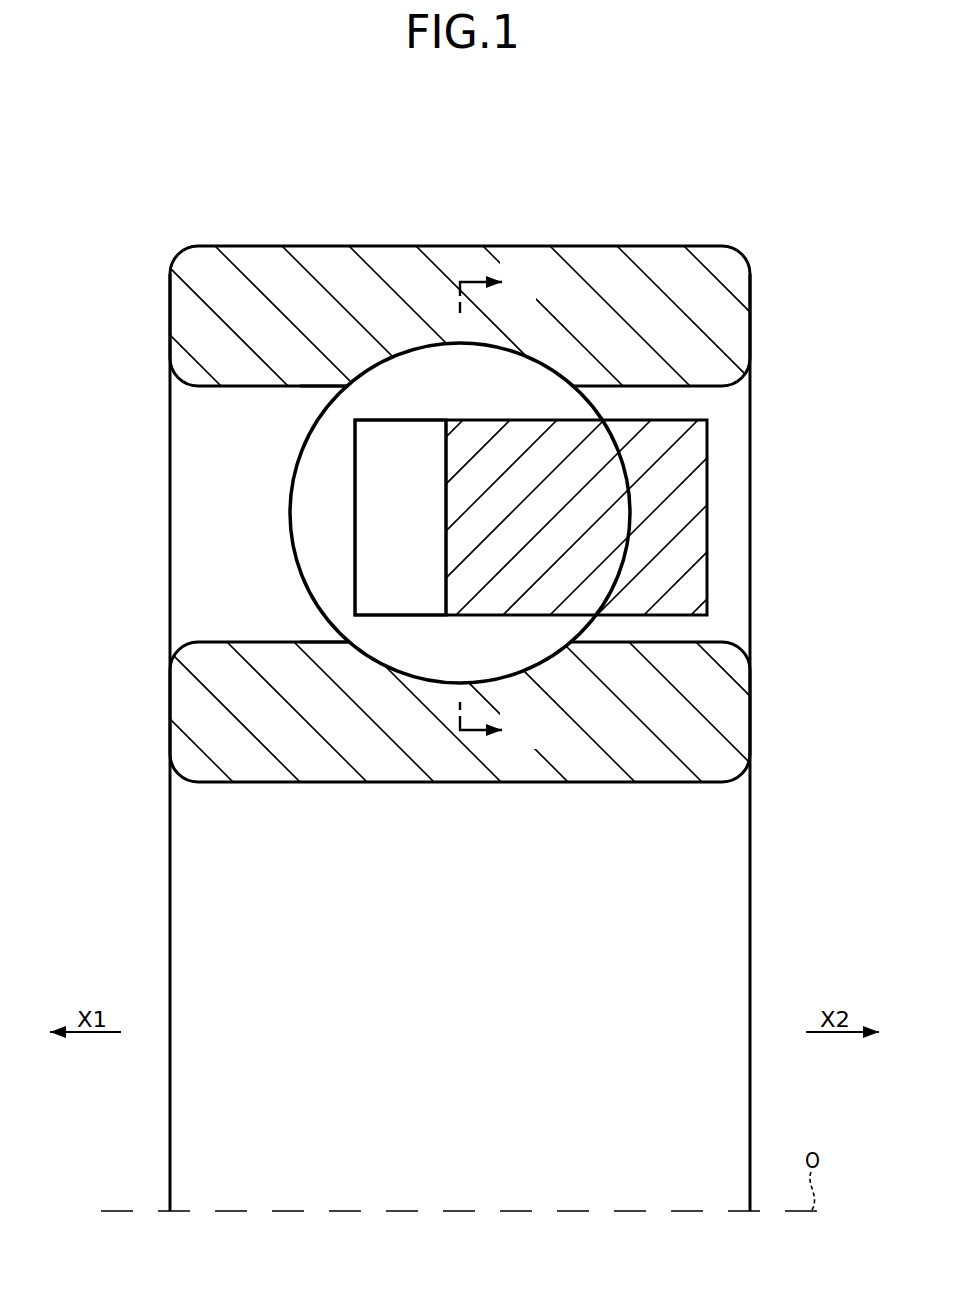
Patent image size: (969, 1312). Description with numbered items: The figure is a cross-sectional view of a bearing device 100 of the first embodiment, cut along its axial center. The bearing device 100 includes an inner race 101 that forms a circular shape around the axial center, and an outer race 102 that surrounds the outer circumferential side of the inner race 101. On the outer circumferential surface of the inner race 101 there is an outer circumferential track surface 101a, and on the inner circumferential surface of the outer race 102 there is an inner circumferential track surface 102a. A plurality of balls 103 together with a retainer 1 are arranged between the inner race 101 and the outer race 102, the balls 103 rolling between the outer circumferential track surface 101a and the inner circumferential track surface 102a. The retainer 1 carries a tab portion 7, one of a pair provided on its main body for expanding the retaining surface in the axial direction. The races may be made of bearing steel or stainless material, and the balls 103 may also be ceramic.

The bearing device 100 is at (746, 171).
The inner race 101 is at (169, 720).
The outer circumferential track surface 101a is at (403, 672).
The outer race 102 is at (168, 324).
The inner circumferential track surface 102a is at (368, 368).
The balls 103 is at (316, 462).
The retainer 1 is at (708, 517).
The tab portion 7 is at (364, 497).